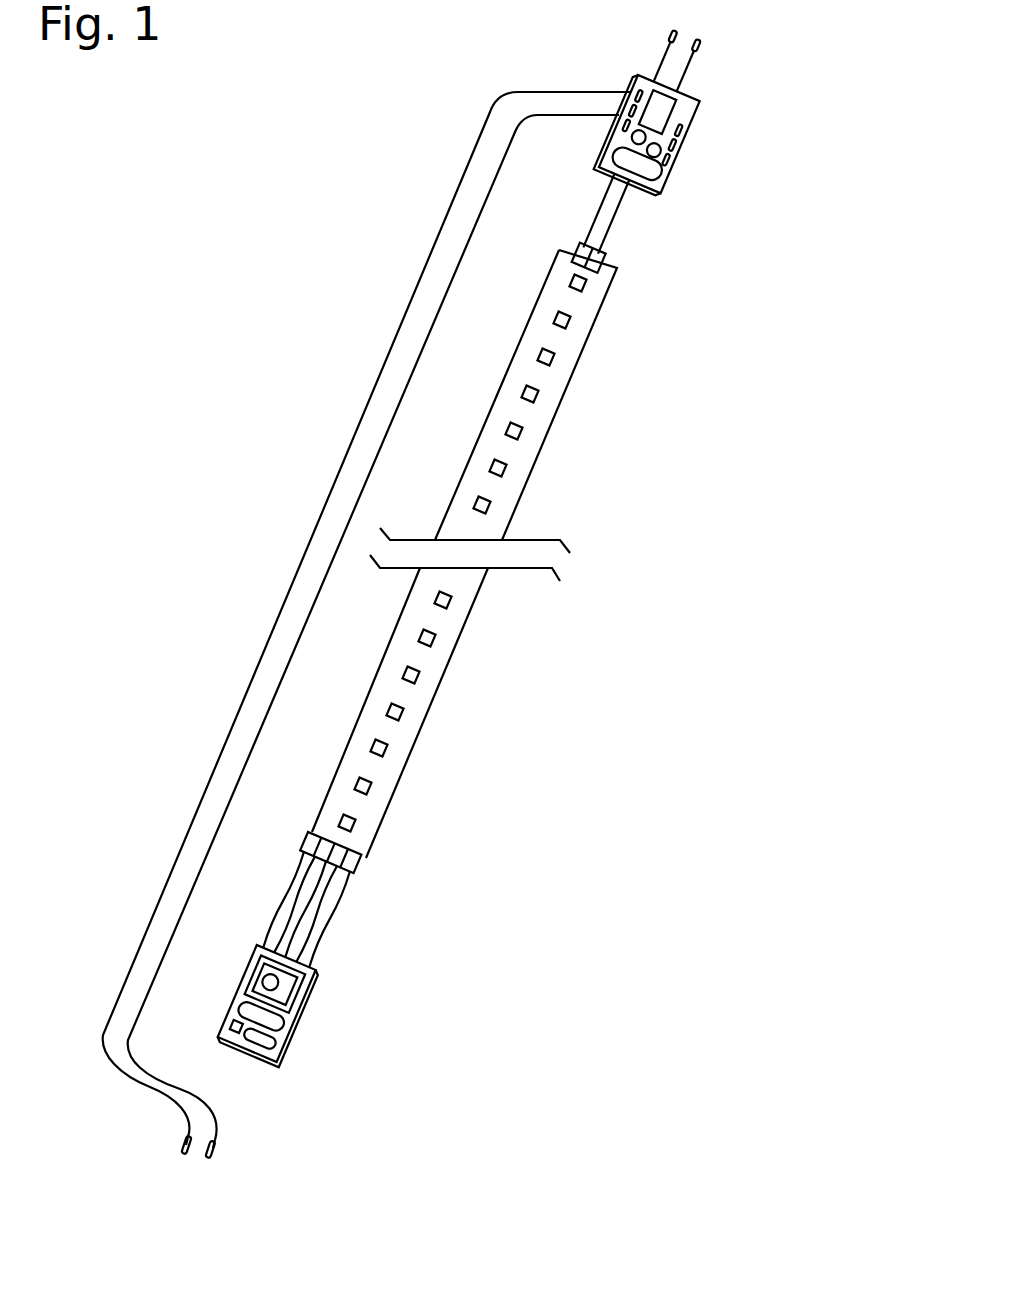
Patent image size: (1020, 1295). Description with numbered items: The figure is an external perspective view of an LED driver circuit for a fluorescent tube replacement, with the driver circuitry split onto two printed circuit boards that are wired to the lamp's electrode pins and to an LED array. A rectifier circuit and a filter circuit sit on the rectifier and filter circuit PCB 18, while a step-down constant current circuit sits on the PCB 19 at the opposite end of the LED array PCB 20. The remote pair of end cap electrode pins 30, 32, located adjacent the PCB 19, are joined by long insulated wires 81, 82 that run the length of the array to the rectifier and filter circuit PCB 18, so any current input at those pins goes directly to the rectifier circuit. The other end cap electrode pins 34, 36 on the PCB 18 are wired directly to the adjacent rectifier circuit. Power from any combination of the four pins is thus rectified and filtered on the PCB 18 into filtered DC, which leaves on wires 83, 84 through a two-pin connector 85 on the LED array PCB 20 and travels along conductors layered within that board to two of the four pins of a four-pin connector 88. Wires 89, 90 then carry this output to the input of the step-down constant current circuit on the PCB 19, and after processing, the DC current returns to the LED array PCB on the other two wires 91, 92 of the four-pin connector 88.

The rectifier and filter circuit PCB 18 is at (716, 96).
The PCB 19 is at (289, 1063).
The LED light strip 20 is at (536, 490).
The end cap electrode pin 30 is at (178, 1143).
The end cap electrode pin 32 is at (222, 1150).
The end cap electrode pin 34 is at (656, 45).
The end cap electrode pin 36 is at (711, 48).
The long insulated wire 81 is at (363, 428).
The long insulated wire 82 is at (387, 446).
The wire 83 is at (597, 203).
The wire 84 is at (618, 223).
The 2-pin connector 85 is at (611, 258).
The 4-pin connector 88 is at (364, 870).
The wire 89 is at (296, 874).
The wire 90 is at (290, 914).
The wire 91 is at (323, 902).
The wire 92 is at (319, 949).